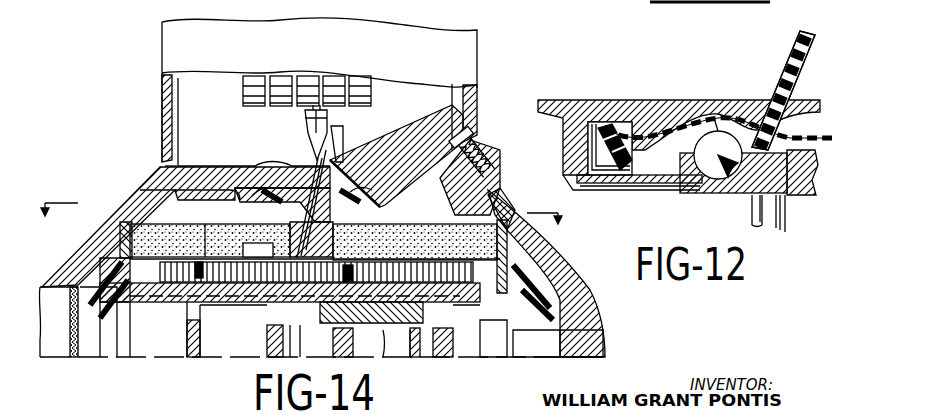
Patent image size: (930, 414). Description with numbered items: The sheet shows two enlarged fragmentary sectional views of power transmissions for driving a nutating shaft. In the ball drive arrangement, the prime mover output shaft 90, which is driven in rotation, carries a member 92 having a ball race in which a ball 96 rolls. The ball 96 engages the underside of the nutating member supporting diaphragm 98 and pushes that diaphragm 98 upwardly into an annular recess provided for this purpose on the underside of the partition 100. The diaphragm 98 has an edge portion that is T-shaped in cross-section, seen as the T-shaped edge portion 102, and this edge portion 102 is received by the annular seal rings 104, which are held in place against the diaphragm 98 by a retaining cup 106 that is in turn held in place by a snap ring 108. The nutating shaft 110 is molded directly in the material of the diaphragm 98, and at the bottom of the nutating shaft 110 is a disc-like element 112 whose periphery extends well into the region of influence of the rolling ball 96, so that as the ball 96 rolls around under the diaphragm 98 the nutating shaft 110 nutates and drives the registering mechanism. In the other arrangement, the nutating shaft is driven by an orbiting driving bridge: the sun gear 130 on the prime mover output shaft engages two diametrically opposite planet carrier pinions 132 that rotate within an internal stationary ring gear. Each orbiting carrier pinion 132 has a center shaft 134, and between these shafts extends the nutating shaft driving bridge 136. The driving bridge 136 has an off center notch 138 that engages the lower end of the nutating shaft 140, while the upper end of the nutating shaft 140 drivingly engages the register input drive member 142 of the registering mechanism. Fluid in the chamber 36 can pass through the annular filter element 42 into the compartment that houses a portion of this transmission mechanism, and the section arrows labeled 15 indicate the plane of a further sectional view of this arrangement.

In FIG. 14, the section line 15- 15 is at (308, 222).
In FIG. 14, the chamber 36 is at (518, 260).
In FIG. 14, the annular filter element 42 is at (506, 216).
In FIG. 14, the sun gear 130 is at (268, 322).
In FIG. 14, the planet carrier pinions 132 is at (205, 250).
In FIG. 14, the center shaft 134 is at (388, 226).
In FIG. 14, the nutating shaft driving bridge 136 is at (336, 233).
In FIG. 14, the off center notch 138 is at (282, 226).
In FIG. 14, the nutating shaft 140 is at (335, 165).
In FIG. 14, the register input drive member 142 is at (300, 132).
In FIG. 12, the prime mover output shaft 90 is at (757, 210).
In FIG. 12, the member 92 is at (696, 188).
In FIG. 12, the ball 96 is at (735, 115).
In FIG. 12, the diaphragm 98 is at (696, 148).
In FIG. 12, the partition 100 is at (548, 114).
In FIG. 12, the T-shaped edge portion 102 is at (612, 125).
In FIG. 12, the annular seal rings 104 is at (645, 140).
In FIG. 12, the retaining cup 106 is at (590, 128).
In FIG. 12, the snap ring 108 is at (596, 182).
In FIG. 12, the nutating shaft 110 is at (790, 65).
In FIG. 12, the disc-like element 112 is at (798, 193).